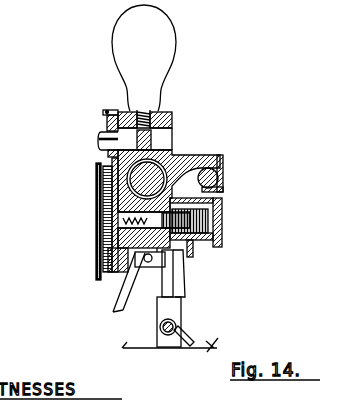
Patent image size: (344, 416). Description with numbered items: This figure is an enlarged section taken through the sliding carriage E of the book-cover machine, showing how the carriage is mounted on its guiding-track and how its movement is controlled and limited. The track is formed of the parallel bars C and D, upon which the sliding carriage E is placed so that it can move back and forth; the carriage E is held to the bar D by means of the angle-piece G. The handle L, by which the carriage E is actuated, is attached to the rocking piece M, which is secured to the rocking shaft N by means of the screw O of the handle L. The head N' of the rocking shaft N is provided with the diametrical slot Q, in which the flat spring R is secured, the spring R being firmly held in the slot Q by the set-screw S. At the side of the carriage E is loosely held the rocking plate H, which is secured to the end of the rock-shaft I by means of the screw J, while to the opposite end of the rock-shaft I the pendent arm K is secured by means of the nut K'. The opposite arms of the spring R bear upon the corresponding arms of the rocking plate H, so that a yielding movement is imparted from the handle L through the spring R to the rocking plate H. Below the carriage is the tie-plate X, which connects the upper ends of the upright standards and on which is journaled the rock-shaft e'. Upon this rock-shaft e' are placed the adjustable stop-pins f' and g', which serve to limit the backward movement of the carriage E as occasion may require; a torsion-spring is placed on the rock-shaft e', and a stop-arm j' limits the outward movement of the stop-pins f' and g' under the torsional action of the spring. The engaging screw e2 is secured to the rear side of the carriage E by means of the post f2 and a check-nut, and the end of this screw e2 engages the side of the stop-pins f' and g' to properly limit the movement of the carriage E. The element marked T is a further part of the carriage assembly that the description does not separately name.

The handle L is at (160, 38).
The rocking piece M is at (128, 111).
The sliding carriage E is at (165, 111).
The screw of the handle O is at (152, 110).
The rocking shaft N is at (171, 113).
The set-screw S is at (107, 113).
The flat spring R is at (110, 140).
The head of the rocking shaft N' is at (79, 155).
The diametrical slot Q is at (113, 157).
The track bar C is at (178, 176).
The track bar D is at (222, 170).
The angle-piece G is at (219, 181).
The nut K' is at (213, 222).
The pendent arm K is at (210, 258).
The screw J is at (96, 240).
The rack T is at (104, 260).
The rocking plate H is at (119, 282).
The post f2 is at (147, 267).
The engaging screw e2 is at (152, 258).
The adjustable stop-pin f' is at (182, 282).
The adjustable stop-pin g' is at (198, 279).
The rock-shaft I is at (145, 322).
The rock-shaft e' is at (154, 328).
The link j' is at (194, 325).
The tie-plate X is at (180, 338).